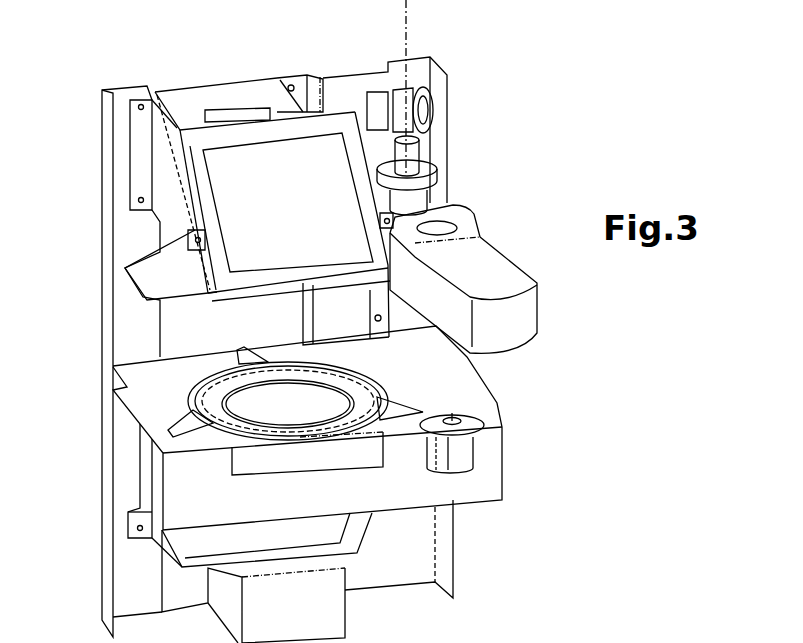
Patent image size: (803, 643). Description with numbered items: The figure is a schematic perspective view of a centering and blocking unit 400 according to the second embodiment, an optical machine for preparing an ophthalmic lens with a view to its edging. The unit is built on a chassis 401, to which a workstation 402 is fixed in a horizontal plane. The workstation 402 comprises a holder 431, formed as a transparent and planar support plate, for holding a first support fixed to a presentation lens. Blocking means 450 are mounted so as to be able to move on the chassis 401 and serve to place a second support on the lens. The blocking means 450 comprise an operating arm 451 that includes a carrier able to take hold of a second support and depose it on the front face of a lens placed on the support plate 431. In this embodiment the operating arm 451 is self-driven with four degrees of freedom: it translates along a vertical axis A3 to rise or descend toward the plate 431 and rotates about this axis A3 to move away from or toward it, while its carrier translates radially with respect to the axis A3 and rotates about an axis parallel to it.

The vertical axis A3 is at (407, 35).
The centering and blocking unit 400 is at (476, 116).
The chassis 401 is at (134, 236).
The workstation 402 is at (480, 395).
The holder 431 is at (395, 372).
The blocking means 450 is at (490, 214).
The operating arm 451 is at (540, 300).